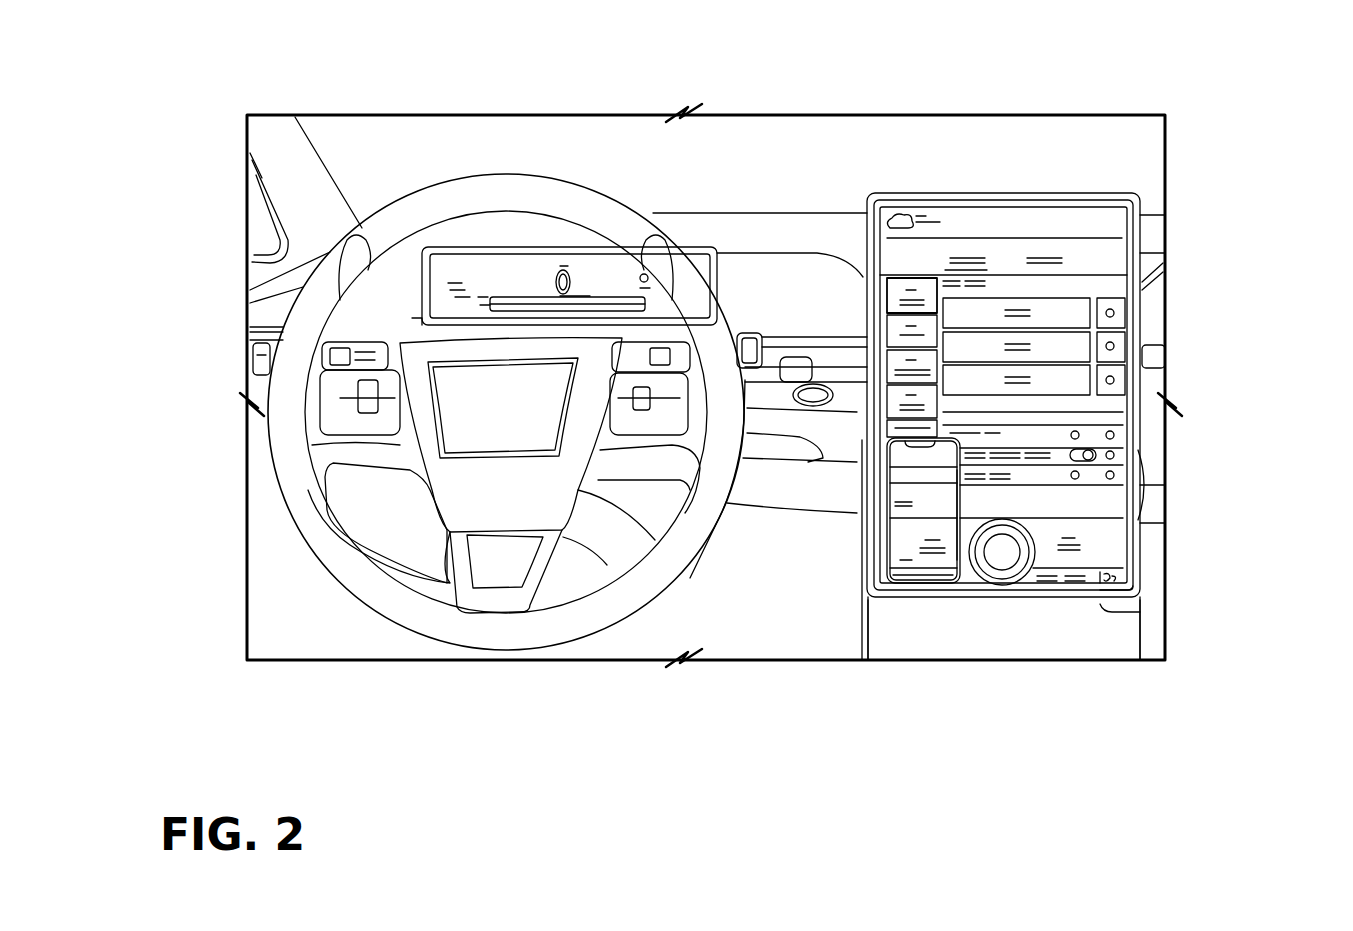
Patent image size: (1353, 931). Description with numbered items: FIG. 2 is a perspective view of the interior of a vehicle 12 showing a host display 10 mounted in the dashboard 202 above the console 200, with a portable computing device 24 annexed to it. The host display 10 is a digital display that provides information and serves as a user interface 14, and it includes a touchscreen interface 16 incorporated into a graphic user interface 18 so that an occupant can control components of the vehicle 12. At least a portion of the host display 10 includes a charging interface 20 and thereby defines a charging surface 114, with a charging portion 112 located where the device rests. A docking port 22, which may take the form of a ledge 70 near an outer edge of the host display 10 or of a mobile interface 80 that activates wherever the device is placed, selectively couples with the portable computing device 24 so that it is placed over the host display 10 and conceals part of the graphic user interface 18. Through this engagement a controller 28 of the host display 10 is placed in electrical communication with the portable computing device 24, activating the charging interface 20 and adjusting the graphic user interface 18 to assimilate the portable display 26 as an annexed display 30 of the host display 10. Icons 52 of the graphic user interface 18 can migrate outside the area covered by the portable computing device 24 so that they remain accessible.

The host display 10 is at (1087, 505).
The vehicle 12 is at (860, 138).
The user interface 14 is at (1108, 443).
The touchscreen interface 16 is at (1063, 222).
The graphic user interface 18 is at (1062, 345).
The charging interface 20 is at (1087, 258).
The docking port 22 is at (967, 580).
The portable computing device 24 is at (910, 423).
The portable display 26 is at (897, 455).
The controller 28 is at (1110, 608).
The annexed display 30 is at (921, 560).
The icons 52 is at (922, 507).
The ledge 70 is at (1127, 590).
The mobile interface 80 is at (1108, 410).
The charging portion 112 is at (965, 495).
The charging surface 114 is at (1028, 217).
The console 200 is at (1082, 645).
The dashboard 202 is at (792, 213).